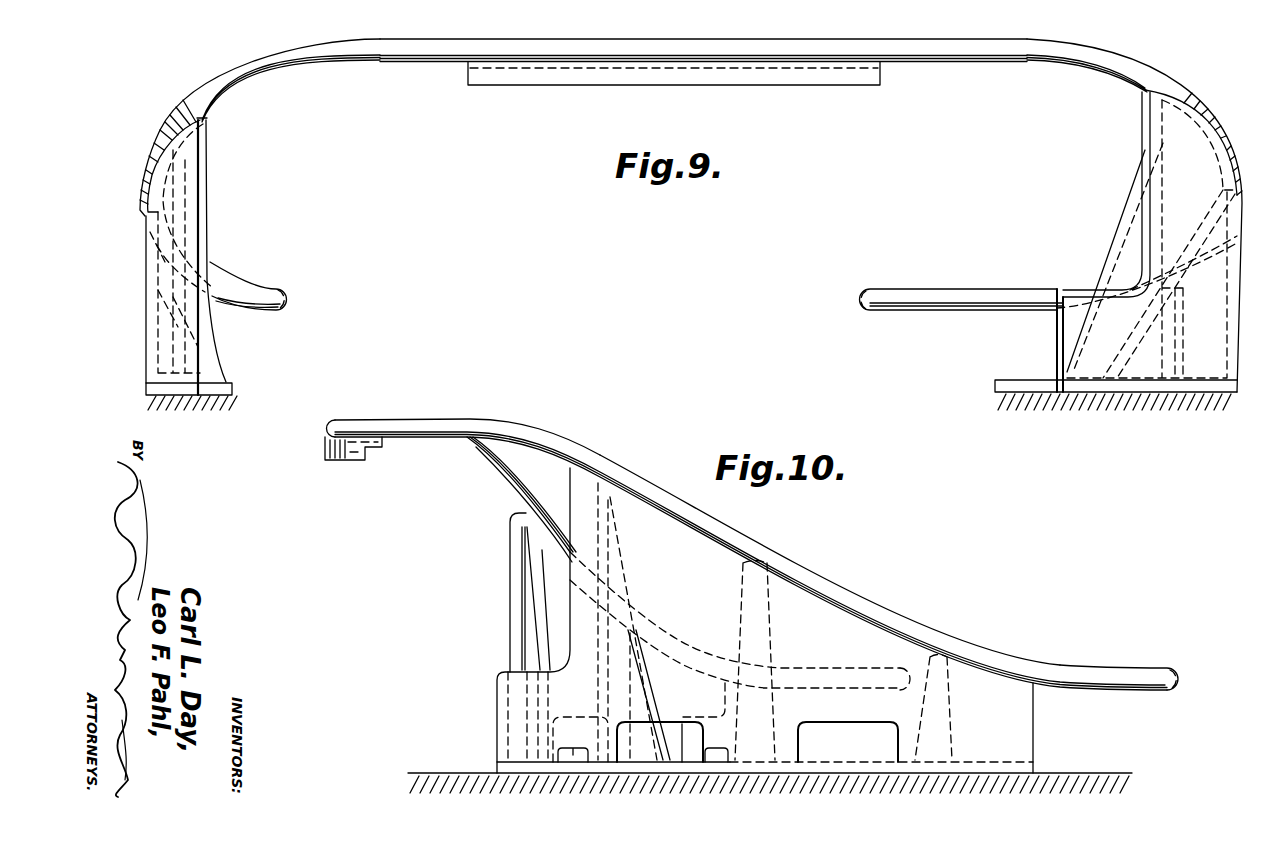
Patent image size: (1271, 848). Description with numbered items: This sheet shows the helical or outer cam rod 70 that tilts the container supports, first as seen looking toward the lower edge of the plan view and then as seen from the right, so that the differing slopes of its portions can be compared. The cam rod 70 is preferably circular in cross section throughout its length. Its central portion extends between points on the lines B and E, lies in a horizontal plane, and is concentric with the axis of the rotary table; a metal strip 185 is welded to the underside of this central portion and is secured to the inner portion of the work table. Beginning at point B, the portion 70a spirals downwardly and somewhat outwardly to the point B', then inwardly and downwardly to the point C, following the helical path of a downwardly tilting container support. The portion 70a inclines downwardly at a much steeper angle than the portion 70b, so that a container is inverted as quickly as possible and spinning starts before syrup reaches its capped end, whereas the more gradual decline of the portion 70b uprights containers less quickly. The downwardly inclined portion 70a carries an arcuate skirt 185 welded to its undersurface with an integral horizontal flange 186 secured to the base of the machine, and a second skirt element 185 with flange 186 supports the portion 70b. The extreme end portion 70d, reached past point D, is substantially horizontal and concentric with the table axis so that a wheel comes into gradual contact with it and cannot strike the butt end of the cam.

In FIG. 9, the helical or outer cam rod 70 is at (428, 63).
In FIG. 10, the helical or outer cam rod 70 is at (549, 426).
In FIG. 9, the downwardly inclined portion of cam rod 70a is at (153, 148).
In FIG. 10, the downwardly inclined portion of cam rod 70a is at (658, 627).
In FIG. 9, the gradual decline portion of cam rod 70b is at (1201, 109).
In FIG. 10, the gradual decline portion of cam rod 70b is at (759, 542).
In FIG. 9, the extreme end portion of cam rod 70d is at (928, 287).
In FIG. 10, the extreme end portion of cam rod 70d is at (1085, 670).
In FIG. 9, the metal strip / arcuate skirt 185 is at (148, 311).
In FIG. 10, the metal strip / arcuate skirt 185 is at (345, 458).
In FIG. 9, the horizontal flange 186 is at (190, 398).
In FIG. 10, the horizontal flange 186 is at (483, 772).
In FIG. 9, the point B is at (397, 29).
In FIG. 10, the point B is at (425, 414).
In FIG. 9, the point B' is at (205, 189).
In FIG. 9, the point C is at (294, 293).
In FIG. 10, the point C is at (908, 677).
In FIG. 9, the point D is at (860, 295).
In FIG. 10, the point D is at (1175, 670).
In FIG. 9, the point E is at (1010, 40).
In FIG. 10, the point E is at (478, 420).